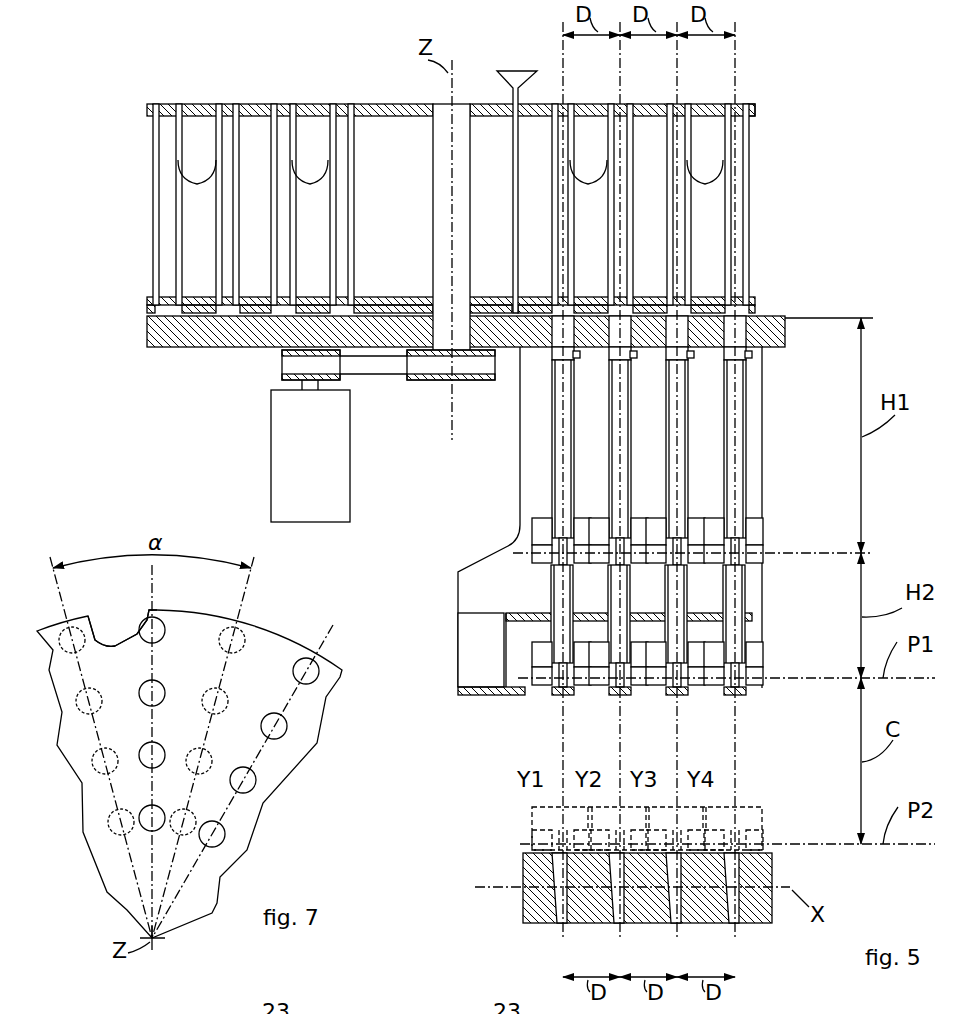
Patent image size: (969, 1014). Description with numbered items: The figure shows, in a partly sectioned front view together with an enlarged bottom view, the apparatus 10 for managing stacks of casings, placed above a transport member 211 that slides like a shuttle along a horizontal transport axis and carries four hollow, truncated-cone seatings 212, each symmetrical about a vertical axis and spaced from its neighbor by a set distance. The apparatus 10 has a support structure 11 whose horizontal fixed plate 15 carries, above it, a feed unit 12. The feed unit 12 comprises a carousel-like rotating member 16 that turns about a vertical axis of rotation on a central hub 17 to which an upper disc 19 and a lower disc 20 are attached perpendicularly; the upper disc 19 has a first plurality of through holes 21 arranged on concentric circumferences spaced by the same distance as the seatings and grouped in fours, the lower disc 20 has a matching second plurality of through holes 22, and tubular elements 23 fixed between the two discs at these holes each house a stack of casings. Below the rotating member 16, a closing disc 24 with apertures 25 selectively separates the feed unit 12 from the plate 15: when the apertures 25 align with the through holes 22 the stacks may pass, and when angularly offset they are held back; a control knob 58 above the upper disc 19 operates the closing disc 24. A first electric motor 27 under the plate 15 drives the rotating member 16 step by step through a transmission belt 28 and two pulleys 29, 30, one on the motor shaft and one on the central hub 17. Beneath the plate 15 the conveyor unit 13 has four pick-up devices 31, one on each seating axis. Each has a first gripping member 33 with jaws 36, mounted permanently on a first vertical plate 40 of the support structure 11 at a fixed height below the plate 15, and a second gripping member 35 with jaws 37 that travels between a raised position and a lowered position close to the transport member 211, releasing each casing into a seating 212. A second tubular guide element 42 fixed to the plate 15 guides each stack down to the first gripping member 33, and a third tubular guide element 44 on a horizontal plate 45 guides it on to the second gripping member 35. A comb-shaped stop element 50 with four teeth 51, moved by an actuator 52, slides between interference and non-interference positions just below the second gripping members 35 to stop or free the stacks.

In FIG. 5, the apparatus 10 is at (841, 66).
In FIG. 5, the support structure 11 is at (515, 437).
In FIG. 5, the feed unit 12 is at (754, 99).
In FIG. 5, the conveyor unit 13 is at (830, 604).
In FIG. 5, the plate 15 is at (782, 346).
In FIG. 5, the rotating member 16 is at (267, 97).
In FIG. 5, the central hub 17 is at (442, 180).
In FIG. 5, the upper disc 19 is at (492, 105).
In FIG. 5, the lower disc 20 is at (493, 300).
In FIG. 7, the lower disc 20 is at (115, 620).
In FIG. 5, the through holes 21 is at (731, 105).
In FIG. 7, the through holes 22 is at (123, 810).
In FIG. 5, the tubular elements 23 is at (451, 183).
In FIG. 5, the closing disc 24 is at (395, 305).
In FIG. 7, the closing disc 24 is at (283, 652).
In FIG. 7, the apertures 25 is at (243, 858).
In FIG. 5, the first electric motor 27 is at (290, 447).
In FIG. 5, the transmission belt 28 is at (367, 367).
In FIG. 5, the pulley 29 is at (280, 350).
In FIG. 5, the pulley 30 is at (465, 382).
In FIG. 5, the pick-up devices 31 is at (660, 504).
In FIG. 5, the first gripping member 33 is at (542, 517).
In FIG. 5, the second gripping member 35 is at (540, 689).
In FIG. 5, the jaws 36 is at (757, 563).
In FIG. 5, the jaws 37 is at (757, 685).
In FIG. 5, the first vertical plate 40 is at (757, 430).
In FIG. 5, the second tubular guide element 42 is at (723, 375).
In FIG. 5, the third tubular guide element 44 is at (745, 592).
In FIG. 5, the horizontal plate 45 is at (518, 615).
In FIG. 5, the stop element 50 is at (493, 693).
In FIG. 5, the teeth 51 is at (737, 697).
In FIG. 5, the actuator 52 is at (473, 648).
In FIG. 5, the control knob 58 is at (528, 71).
In FIG. 5, the transport member 211 is at (522, 903).
In FIG. 5, the seatings 212 is at (737, 915).